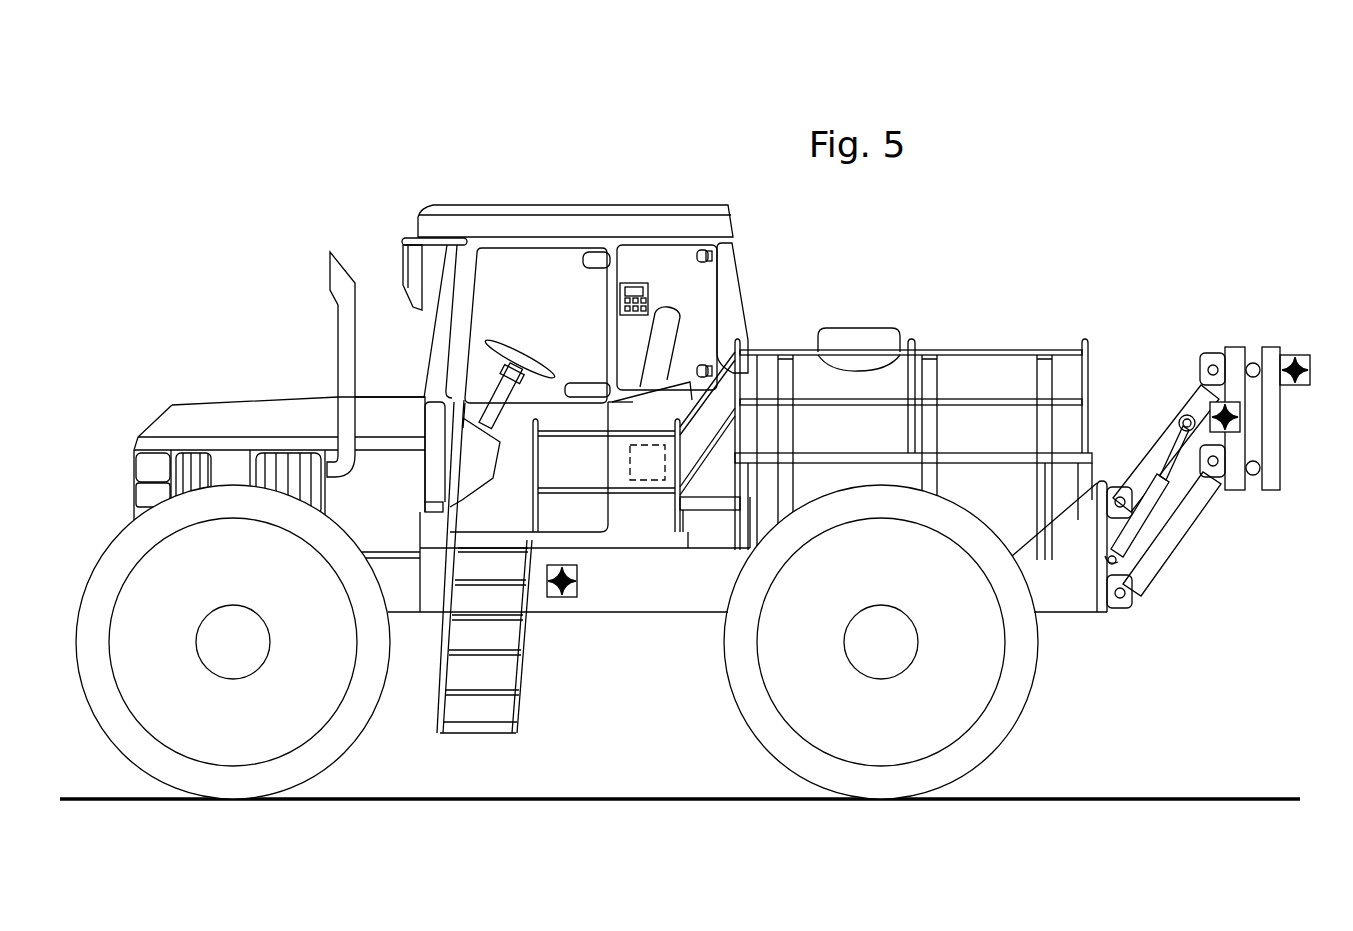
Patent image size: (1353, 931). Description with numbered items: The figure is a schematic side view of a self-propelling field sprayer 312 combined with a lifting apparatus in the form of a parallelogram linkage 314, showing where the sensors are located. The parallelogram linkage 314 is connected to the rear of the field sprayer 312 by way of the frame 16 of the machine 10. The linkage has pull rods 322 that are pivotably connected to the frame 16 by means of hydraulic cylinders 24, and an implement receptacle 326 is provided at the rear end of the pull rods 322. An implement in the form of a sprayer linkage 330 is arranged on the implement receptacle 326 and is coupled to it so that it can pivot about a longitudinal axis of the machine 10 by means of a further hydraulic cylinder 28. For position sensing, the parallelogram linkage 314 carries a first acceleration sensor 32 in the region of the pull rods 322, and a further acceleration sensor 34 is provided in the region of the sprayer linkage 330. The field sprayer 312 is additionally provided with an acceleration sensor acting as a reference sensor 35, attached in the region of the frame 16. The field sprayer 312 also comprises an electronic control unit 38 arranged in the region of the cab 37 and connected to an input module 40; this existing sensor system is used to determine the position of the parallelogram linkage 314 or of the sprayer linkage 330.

The machine 10 is at (258, 207).
The frame 16 is at (710, 585).
The hydraulic cylinders 24 is at (1177, 453).
The further hydraulic cylinder 28 is at (1253, 364).
The first acceleration sensor 32 is at (1232, 432).
The further acceleration sensor 34 is at (1305, 355).
The reference sensor 35 is at (568, 594).
The cab 37 is at (548, 262).
The electronic control unit 38 is at (646, 478).
The input module 40 is at (636, 298).
The self-propelling field sprayer 312 is at (387, 472).
The parallelogram linkage 314 is at (1157, 453).
The pull rods 322 is at (1175, 513).
The implement receptacle 326 is at (1235, 357).
The sprayer linkage 330 is at (1272, 481).